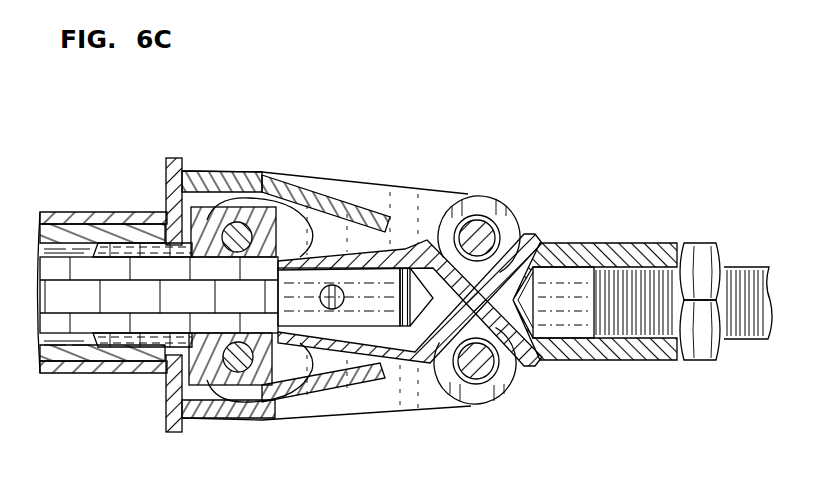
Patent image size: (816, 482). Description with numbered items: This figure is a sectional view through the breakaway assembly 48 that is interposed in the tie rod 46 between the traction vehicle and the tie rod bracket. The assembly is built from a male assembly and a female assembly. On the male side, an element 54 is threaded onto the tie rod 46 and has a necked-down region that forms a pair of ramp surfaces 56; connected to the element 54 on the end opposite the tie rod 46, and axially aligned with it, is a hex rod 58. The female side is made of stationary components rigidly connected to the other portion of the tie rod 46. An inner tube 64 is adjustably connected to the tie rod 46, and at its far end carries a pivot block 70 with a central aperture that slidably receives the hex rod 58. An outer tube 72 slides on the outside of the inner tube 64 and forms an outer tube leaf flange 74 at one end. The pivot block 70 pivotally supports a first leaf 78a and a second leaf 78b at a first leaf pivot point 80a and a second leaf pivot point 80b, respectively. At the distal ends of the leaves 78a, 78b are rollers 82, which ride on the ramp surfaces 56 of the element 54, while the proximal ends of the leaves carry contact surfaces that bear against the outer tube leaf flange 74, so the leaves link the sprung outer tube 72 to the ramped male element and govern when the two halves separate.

The tie rod 46 is at (750, 267).
The breakaway assembly 48 is at (353, 137).
The element threaded on tie rod 54 is at (618, 243).
The ramp surfaces 56 is at (490, 203).
The hex rod 58 is at (73, 224).
The inner tube 64 is at (97, 243).
The pivot block 70 is at (205, 220).
The outer tube 72 is at (124, 245).
The outer tube leaf flange 74 is at (174, 158).
The first leaf 78a is at (407, 208).
The second leaf 78b is at (388, 394).
The first leaf pivot point 80a is at (240, 372).
The second leaf pivot point 80b is at (250, 198).
The rollers 82 is at (494, 221).